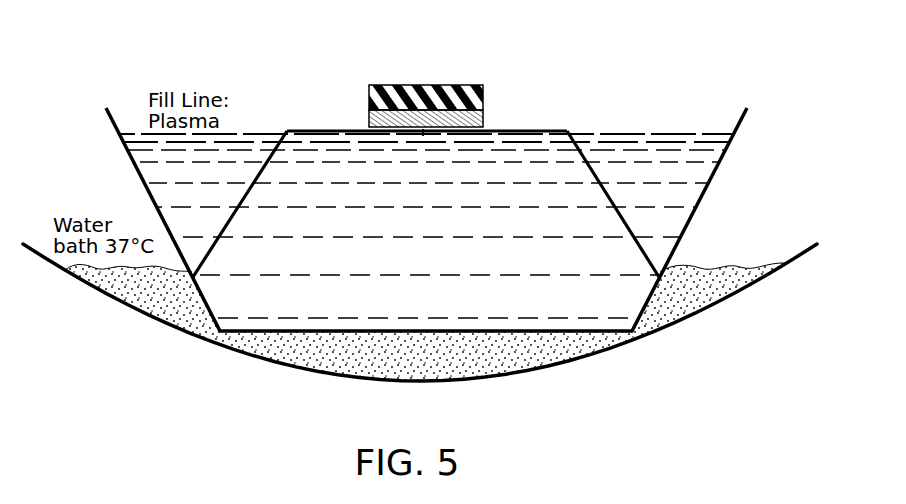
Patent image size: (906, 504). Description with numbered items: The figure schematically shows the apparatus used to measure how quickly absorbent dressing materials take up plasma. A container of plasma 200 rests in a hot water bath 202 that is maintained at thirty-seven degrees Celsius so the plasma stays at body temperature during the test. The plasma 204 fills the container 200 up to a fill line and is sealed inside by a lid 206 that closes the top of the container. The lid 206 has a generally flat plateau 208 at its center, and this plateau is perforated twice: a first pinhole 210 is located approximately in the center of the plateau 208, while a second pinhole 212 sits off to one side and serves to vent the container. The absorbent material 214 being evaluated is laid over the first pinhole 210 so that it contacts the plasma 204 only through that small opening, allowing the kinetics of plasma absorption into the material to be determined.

The container of plasma 200 is at (712, 180).
The hot water bath 202 is at (737, 298).
The plasma 204 is at (295, 131).
The lid 206 is at (311, 158).
The plateau 208 is at (351, 131).
The first pinhole 210 is at (423, 132).
The second pinhole 212 is at (543, 131).
The absorbent material 214 is at (450, 85).